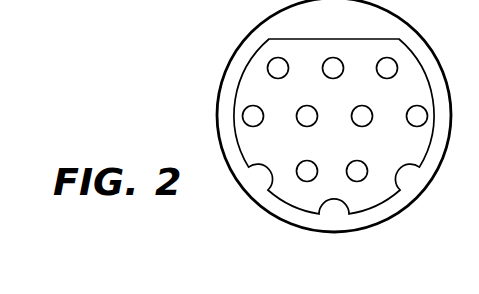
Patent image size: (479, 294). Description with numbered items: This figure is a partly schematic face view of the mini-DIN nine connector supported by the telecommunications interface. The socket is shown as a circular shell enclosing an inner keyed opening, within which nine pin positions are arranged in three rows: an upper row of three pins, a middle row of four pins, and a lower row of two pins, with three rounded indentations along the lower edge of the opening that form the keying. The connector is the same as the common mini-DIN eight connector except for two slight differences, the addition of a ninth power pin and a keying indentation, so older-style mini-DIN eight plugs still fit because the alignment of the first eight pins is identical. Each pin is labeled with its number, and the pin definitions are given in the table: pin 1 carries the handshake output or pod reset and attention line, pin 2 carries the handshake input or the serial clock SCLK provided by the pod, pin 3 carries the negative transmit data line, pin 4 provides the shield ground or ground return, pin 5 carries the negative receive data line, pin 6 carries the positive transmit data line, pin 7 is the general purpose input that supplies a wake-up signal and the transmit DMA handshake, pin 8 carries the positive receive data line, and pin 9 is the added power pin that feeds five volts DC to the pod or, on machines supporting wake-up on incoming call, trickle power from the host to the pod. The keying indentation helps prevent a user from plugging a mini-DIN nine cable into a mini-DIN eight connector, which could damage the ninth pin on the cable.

The pin 1 is at (357, 186).
The pin 2 is at (306, 186).
The pin 3 is at (417, 131).
The pin 4 is at (362, 131).
The pin 5 is at (253, 131).
The pin 6 is at (387, 82).
The pin 7 is at (333, 82).
The pin 8 is at (278, 82).
The pin 9 is at (307, 131).